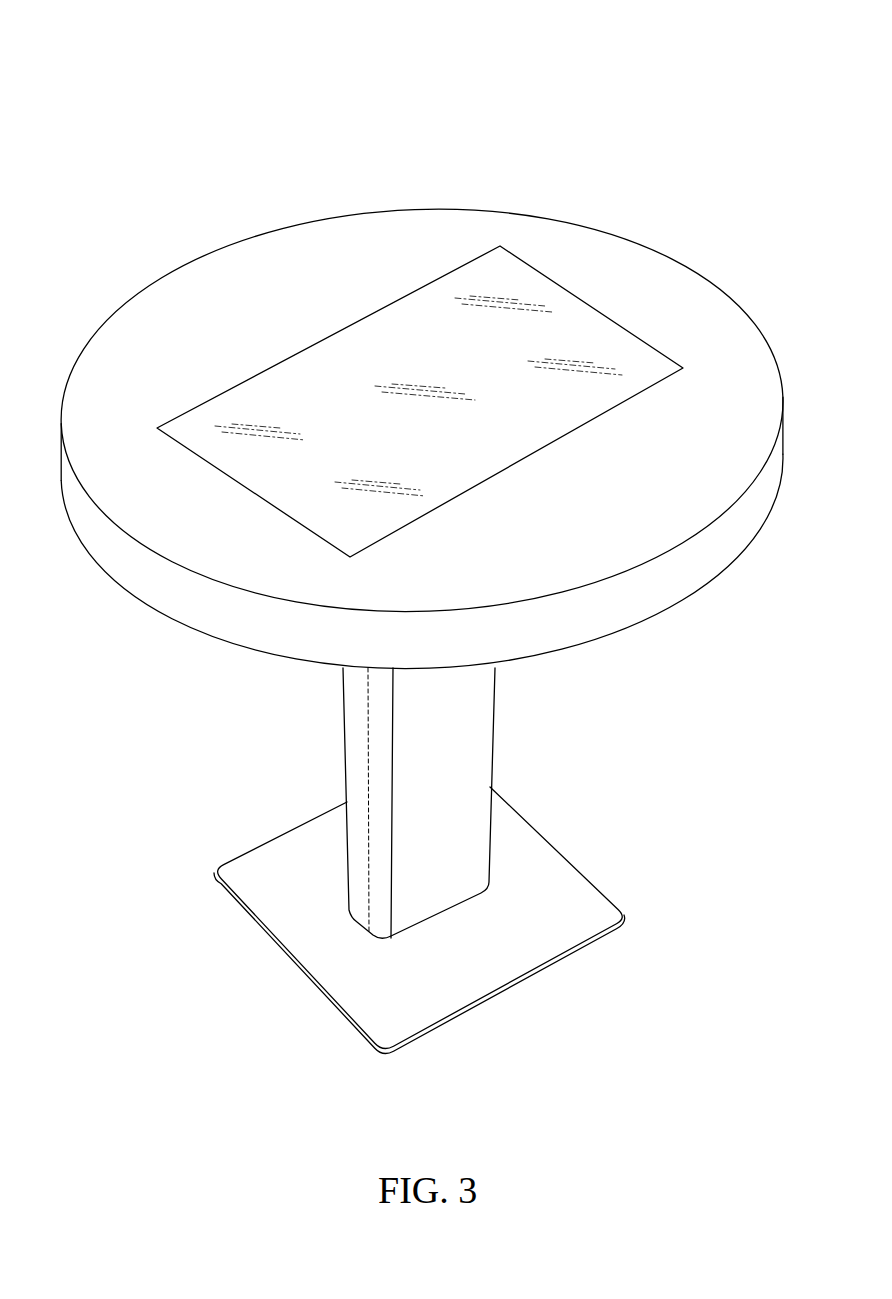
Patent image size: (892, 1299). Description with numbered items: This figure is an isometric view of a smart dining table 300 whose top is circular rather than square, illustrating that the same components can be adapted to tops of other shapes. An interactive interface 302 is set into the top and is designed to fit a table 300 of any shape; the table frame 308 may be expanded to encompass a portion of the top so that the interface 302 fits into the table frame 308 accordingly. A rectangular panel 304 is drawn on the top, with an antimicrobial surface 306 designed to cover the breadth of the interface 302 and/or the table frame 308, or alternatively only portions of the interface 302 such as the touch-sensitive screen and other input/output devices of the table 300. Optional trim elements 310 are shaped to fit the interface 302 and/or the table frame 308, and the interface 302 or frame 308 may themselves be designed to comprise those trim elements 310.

The table 300 is at (680, 100).
The interface 302 is at (710, 322).
The rectangular panel 304 is at (322, 396).
The antimicrobial surface 306 is at (497, 298).
The table frame 308 is at (463, 715).
The trim elements 310 is at (157, 585).